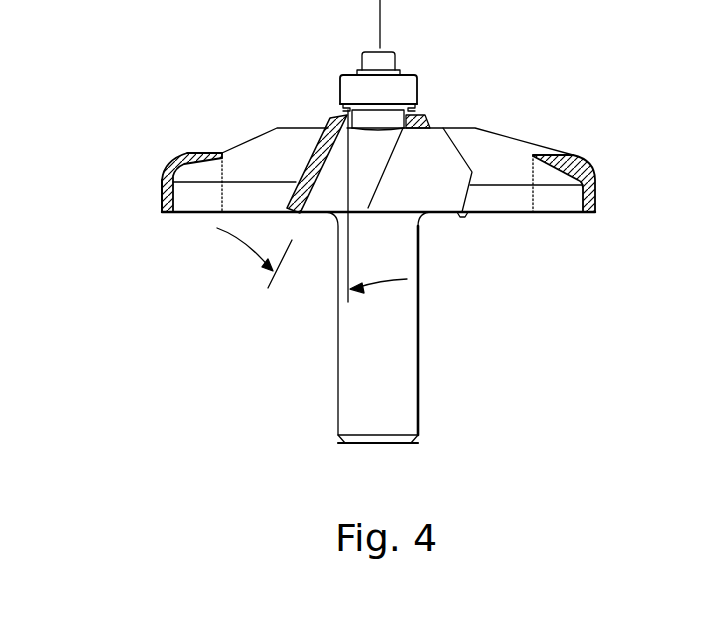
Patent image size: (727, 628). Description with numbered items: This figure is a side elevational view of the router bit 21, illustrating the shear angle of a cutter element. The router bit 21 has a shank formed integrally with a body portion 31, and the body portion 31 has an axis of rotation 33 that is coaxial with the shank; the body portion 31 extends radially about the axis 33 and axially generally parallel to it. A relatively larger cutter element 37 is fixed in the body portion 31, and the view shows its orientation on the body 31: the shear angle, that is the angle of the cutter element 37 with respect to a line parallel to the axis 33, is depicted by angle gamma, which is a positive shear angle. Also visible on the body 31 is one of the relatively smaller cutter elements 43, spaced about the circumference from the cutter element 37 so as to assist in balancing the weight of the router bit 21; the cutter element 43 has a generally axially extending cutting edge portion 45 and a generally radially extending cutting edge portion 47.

The router bit 21 is at (510, 133).
The body portion 31 is at (275, 155).
The axis of rotation 33 is at (383, 15).
The cutter element 37 is at (308, 150).
The cutter element 43 is at (160, 155).
The cutting edge portion 45 is at (162, 195).
The cutting edge portion 47 is at (197, 152).